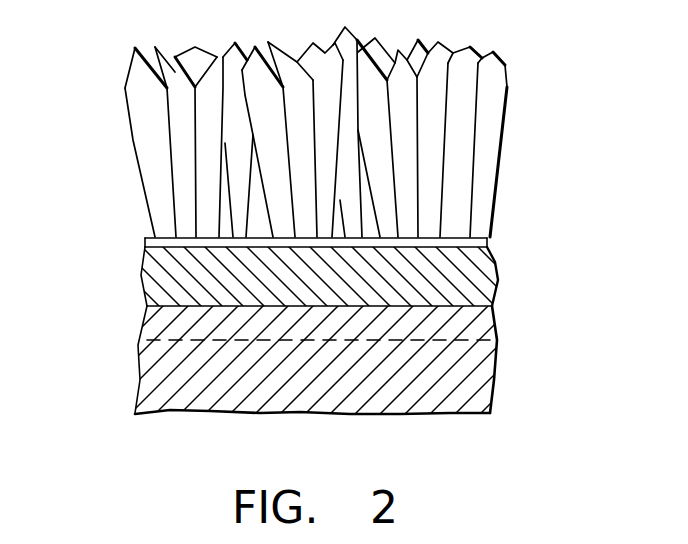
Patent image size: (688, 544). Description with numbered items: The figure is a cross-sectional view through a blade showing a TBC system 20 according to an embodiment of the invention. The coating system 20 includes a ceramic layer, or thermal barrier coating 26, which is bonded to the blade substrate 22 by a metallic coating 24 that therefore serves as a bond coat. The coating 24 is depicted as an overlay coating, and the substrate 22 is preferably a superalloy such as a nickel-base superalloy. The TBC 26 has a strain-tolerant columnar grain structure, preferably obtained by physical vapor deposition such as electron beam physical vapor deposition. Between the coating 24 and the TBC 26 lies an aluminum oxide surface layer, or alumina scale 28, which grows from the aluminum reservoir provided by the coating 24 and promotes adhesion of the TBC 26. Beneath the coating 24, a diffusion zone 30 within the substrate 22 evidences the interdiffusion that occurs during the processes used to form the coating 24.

The TBC system 20 is at (582, 45).
The blade substrate 22 is at (497, 370).
The metallic coating 24 is at (146, 277).
The thermal barrier coating 26 is at (110, 45).
The alumina scale 28 is at (147, 243).
The diffusion zone 30 is at (150, 340).